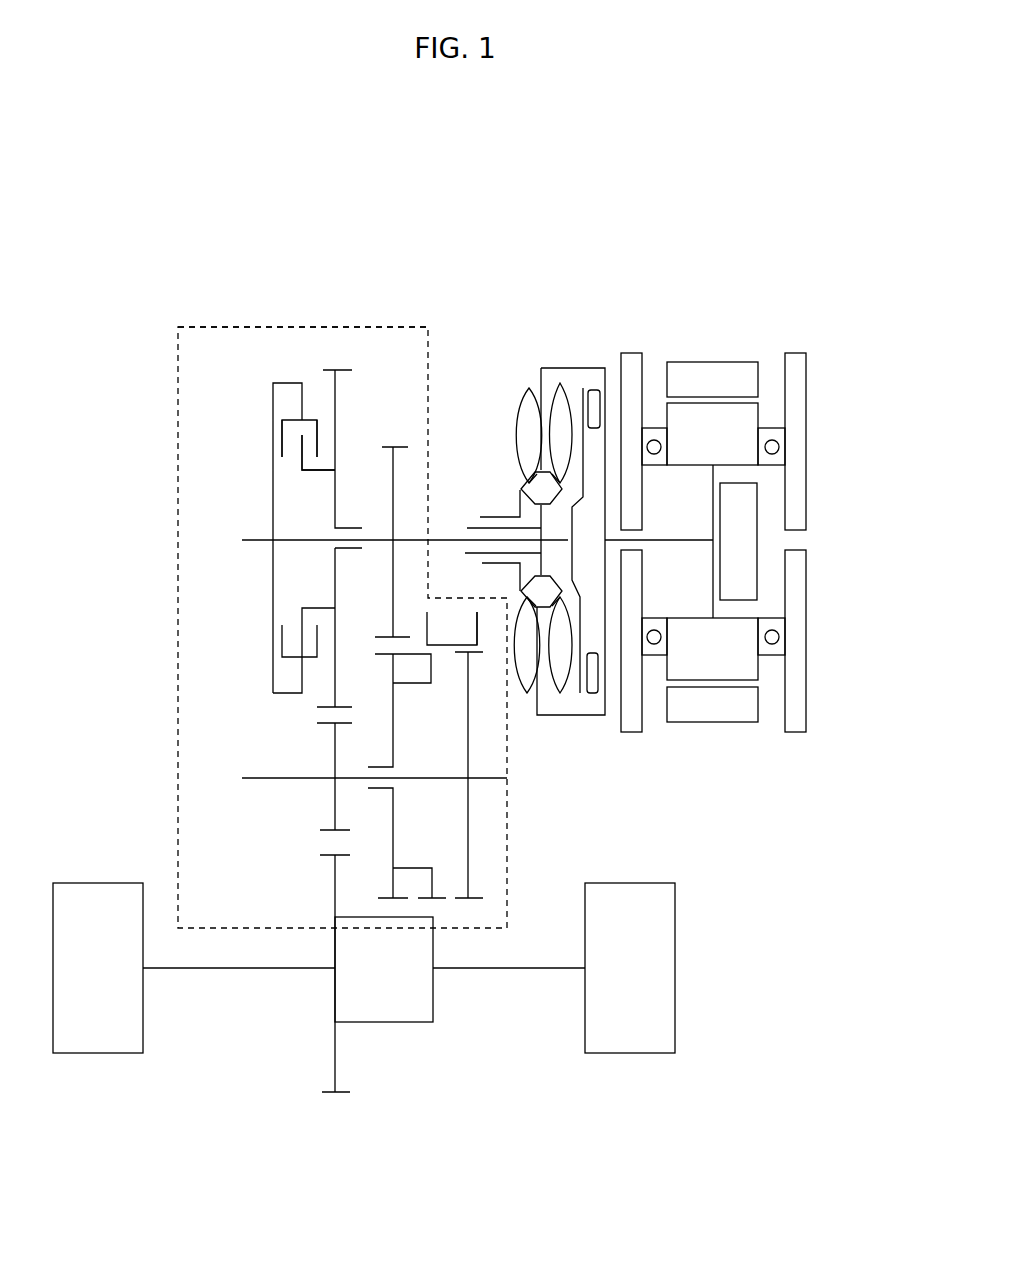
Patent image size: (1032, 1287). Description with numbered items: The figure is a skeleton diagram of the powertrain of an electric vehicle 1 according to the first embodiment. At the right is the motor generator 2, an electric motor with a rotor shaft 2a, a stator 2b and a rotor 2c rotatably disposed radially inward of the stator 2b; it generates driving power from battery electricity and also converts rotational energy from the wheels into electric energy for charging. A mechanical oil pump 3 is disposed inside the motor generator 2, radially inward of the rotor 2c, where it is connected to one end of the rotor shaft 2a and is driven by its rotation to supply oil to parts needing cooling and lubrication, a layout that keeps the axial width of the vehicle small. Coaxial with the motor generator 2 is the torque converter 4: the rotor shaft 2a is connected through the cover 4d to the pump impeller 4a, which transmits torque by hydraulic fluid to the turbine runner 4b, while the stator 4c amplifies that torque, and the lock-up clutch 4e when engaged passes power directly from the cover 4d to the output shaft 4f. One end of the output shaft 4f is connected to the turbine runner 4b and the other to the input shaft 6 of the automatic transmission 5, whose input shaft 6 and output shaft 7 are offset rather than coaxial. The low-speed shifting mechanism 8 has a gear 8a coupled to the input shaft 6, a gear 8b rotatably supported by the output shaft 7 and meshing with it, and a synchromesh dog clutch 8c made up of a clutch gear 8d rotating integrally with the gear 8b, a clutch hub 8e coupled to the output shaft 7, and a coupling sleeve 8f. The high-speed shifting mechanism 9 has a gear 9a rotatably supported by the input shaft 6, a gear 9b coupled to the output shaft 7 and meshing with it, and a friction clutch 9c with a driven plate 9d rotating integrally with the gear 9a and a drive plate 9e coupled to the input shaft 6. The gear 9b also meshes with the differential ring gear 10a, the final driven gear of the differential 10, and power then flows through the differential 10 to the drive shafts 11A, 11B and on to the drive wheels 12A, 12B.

The electric vehicle 1 is at (646, 236).
The motor generator 2 is at (744, 319).
The rotor shaft 2a is at (668, 545).
The stator 2b is at (690, 360).
The rotor 2c is at (762, 417).
The mechanical oil pump 3 is at (757, 542).
The torque converter 4 is at (524, 342).
The pump impeller 4a is at (528, 390).
The turbine runner 4b is at (572, 366).
The stator 4c is at (518, 450).
The cover 4d is at (552, 366).
The lock-up clutch 4e is at (594, 388).
The output shaft 4f is at (452, 528).
The automatic transmission 5 is at (390, 327).
The input shaft 6 is at (242, 542).
The output shaft 7 is at (262, 778).
The low-speed shifting mechanism 8 is at (504, 810).
The gear 8a is at (402, 445).
The gear 8b is at (385, 658).
The dog clutch 8c is at (418, 594).
The clutch gear 8d is at (443, 656).
The clutch hub 8e is at (478, 660).
The coupling sleeve 8f is at (477, 623).
The high-speed shifting mechanism 9 is at (246, 474).
The gear 9a is at (332, 366).
The gear 9b is at (320, 830).
The friction clutch 9c is at (284, 397).
The driven plate 9d is at (297, 472).
The drive plate 9e is at (317, 408).
The differential 10 is at (400, 1022).
The differential ring gear 10a is at (320, 855).
The drive shaft 11A is at (505, 968).
The drive shaft 11B is at (230, 968).
The drive wheel 12A is at (626, 1053).
The drive wheel 12B is at (96, 1053).